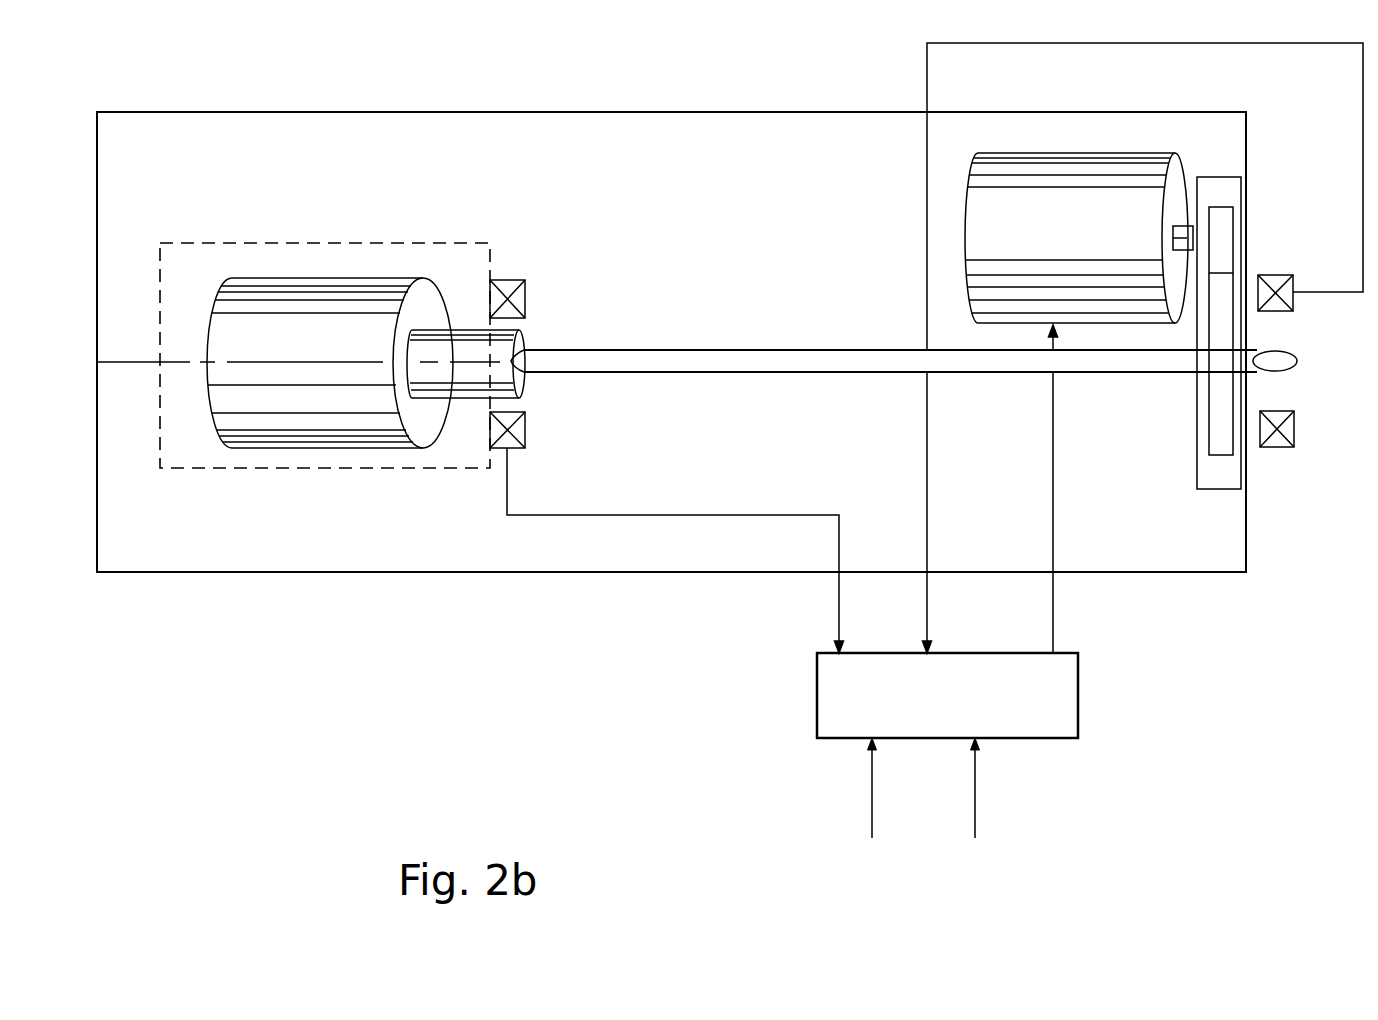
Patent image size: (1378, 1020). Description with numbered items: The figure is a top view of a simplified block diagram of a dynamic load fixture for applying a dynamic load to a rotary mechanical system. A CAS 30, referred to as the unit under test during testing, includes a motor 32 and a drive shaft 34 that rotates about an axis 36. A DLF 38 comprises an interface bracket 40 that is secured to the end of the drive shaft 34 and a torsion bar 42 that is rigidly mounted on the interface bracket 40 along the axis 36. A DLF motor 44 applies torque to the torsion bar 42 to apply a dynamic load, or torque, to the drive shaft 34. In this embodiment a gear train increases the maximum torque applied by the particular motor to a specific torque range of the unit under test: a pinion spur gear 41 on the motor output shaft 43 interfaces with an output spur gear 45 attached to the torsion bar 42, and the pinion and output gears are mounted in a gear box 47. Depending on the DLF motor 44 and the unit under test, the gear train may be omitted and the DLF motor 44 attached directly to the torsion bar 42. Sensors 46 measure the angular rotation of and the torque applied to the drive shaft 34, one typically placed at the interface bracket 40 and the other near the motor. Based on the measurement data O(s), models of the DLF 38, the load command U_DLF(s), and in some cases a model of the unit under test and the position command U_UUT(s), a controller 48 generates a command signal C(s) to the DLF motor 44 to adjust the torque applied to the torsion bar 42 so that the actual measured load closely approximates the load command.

The CAS 30 is at (215, 242).
The motor 32 is at (323, 293).
The drive shaft 34 is at (463, 348).
The axis 36 is at (127, 360).
The DLF 38 is at (885, 257).
The interface bracket 40 is at (525, 343).
The pinion spur gear 41 is at (1225, 232).
The torsion bar 42 is at (730, 350).
The motor output shaft 43 is at (1172, 238).
The DLF motor 44 is at (1047, 152).
The output spur gear 45 is at (1233, 443).
The sensors 46 is at (507, 280).
The gear box 47 is at (1215, 197).
The controller 48 is at (817, 707).